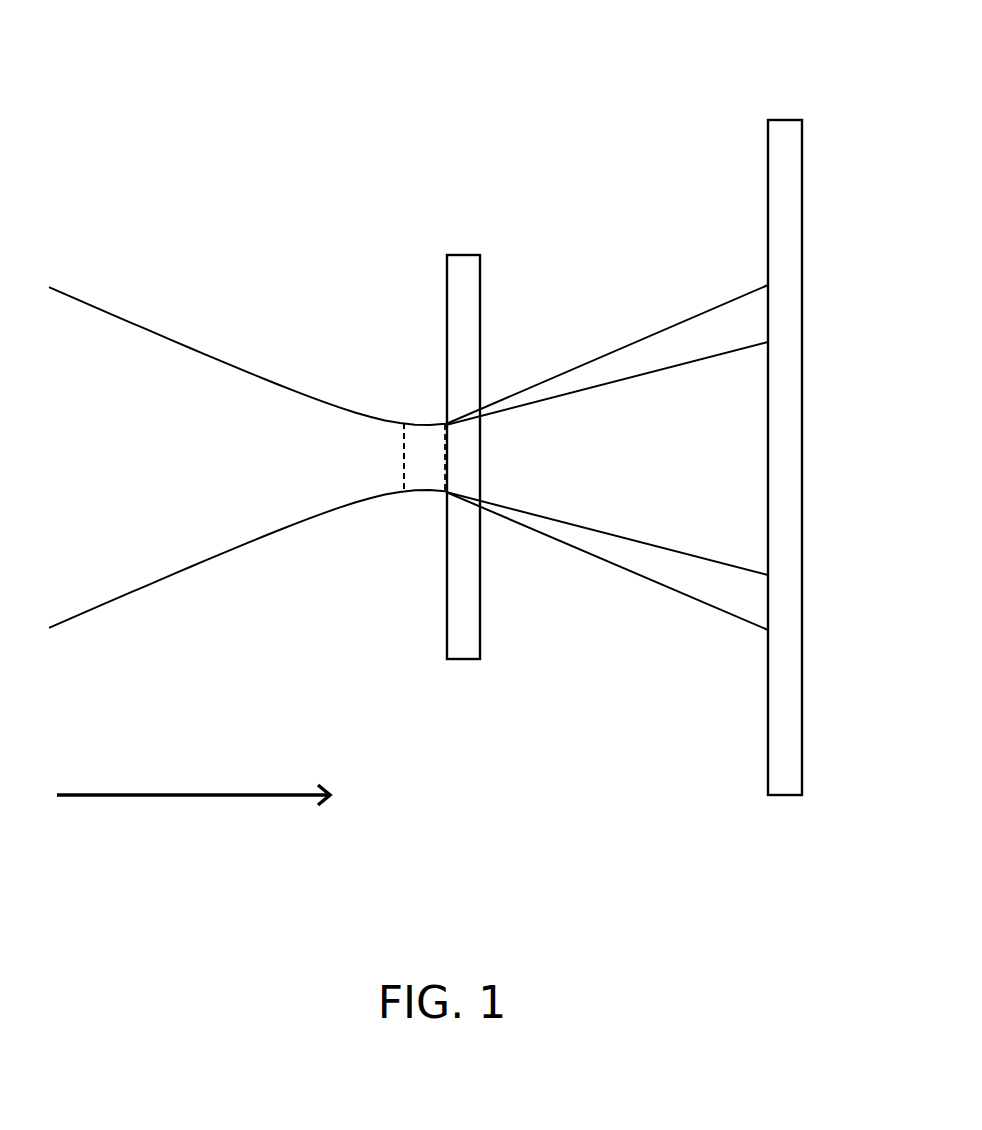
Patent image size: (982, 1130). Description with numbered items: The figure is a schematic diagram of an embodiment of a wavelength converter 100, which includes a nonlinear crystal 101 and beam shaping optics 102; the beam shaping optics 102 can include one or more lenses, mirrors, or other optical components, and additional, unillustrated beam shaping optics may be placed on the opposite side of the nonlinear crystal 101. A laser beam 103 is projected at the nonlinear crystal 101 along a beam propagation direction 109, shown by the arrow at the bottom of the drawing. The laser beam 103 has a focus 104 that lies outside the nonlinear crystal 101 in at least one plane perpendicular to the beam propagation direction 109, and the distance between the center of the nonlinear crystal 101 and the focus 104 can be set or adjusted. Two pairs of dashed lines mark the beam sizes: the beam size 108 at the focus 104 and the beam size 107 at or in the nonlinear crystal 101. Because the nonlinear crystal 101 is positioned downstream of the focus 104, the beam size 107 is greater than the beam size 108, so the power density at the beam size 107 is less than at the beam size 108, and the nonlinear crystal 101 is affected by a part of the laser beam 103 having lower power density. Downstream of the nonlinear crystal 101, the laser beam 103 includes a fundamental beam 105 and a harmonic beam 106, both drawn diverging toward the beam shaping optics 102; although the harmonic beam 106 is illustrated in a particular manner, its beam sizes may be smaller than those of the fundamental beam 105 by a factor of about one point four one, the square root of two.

The wavelength converter 100 is at (490, 118).
The nonlinear crystal 101 is at (462, 659).
The beam shaping optics 102 is at (785, 795).
The laser beam 103 is at (125, 615).
The focus 104 is at (404, 492).
The fundamental beam 105 is at (685, 615).
The harmonic beam 106 is at (657, 352).
The beam size 107 is at (443, 422).
The beam size 108 is at (404, 433).
The beam propagation direction 109 is at (187, 795).